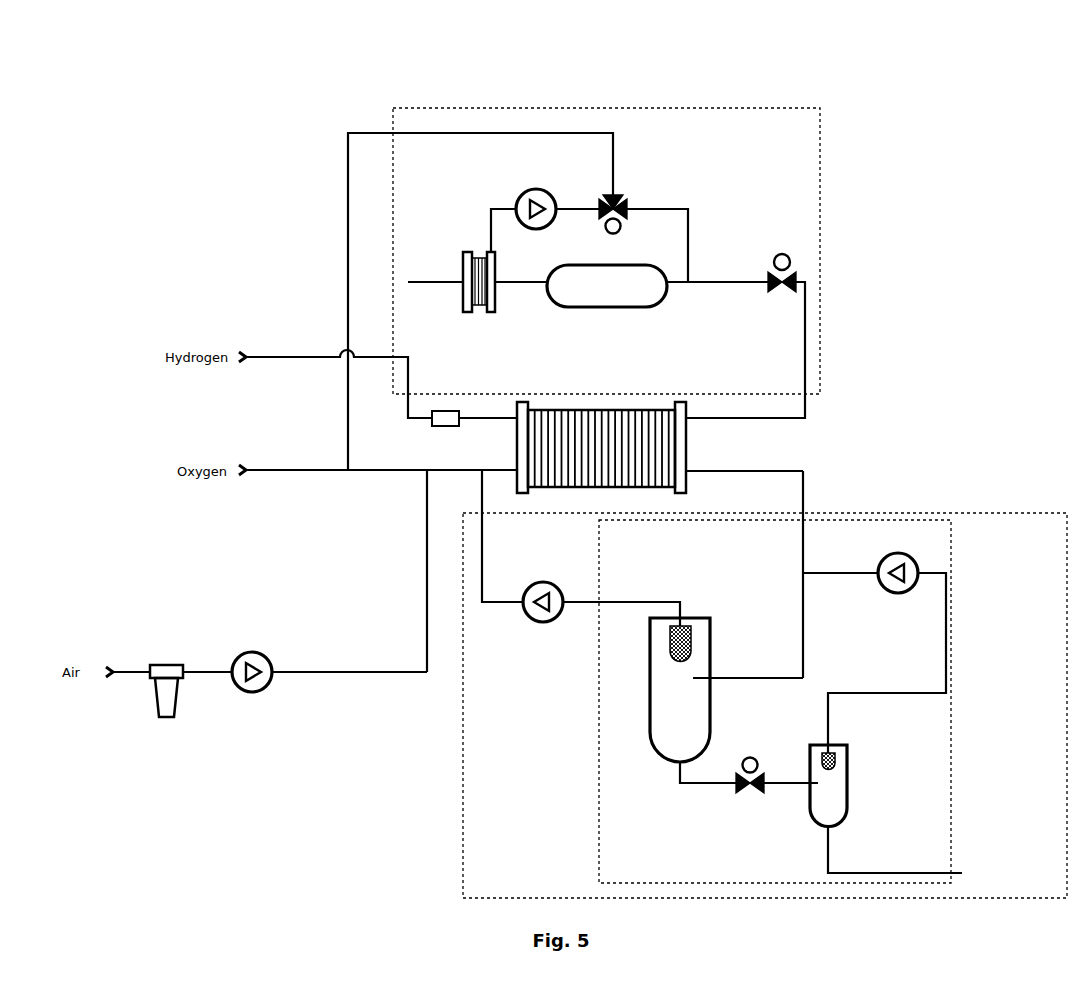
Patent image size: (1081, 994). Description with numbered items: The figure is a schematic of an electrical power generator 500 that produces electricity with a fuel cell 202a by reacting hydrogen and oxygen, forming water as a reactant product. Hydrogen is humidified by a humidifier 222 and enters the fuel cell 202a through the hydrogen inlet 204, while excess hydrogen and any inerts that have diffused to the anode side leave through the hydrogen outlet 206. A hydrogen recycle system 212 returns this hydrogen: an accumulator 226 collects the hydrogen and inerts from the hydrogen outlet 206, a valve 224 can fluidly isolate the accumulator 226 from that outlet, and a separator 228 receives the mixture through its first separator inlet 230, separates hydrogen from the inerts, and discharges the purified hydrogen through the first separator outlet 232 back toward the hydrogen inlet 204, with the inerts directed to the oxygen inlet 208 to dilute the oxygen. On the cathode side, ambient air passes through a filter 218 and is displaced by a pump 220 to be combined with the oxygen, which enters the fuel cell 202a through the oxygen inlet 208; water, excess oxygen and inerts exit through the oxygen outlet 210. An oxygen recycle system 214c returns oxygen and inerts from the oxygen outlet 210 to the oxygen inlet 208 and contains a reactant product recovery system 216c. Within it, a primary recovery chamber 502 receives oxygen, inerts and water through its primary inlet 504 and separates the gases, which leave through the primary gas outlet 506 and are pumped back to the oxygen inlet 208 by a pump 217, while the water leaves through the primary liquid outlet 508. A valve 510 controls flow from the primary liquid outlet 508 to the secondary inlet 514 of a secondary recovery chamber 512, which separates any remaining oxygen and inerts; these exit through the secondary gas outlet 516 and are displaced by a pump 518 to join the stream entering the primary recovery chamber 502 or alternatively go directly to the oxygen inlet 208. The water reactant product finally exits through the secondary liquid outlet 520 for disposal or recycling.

The electrical power generator 500 is at (632, 64).
The hydrogen recycle system 212 is at (744, 96).
The first separator inlet 230 is at (534, 188).
The first separator outlet 232 is at (617, 198).
The valve 224 is at (783, 253).
The accumulator 226 is at (656, 308).
The separator 228 is at (472, 313).
The humidifier 222 is at (446, 410).
The fuel cell 202a is at (635, 407).
The hydrogen inlet 204 is at (515, 421).
The hydrogen outlet 206 is at (690, 421).
The oxygen inlet 208 is at (515, 474).
The oxygen outlet 210 is at (691, 475).
The oxygen recycle system 214c is at (911, 500).
The reactant product recovery system 216c is at (986, 578).
The pump 518 is at (899, 554).
The pump 217 is at (544, 624).
The primary recovery chamber 502 is at (650, 681).
The primary gas outlet 506 is at (676, 615).
The primary inlet 504 is at (710, 677).
The primary liquid outlet 508 is at (679, 763).
The valve 510 is at (750, 757).
The secondary inlet 514 is at (808, 781).
The secondary recovery chamber 512 is at (849, 773).
The secondary gas outlet 516 is at (834, 752).
The secondary liquid outlet 520 is at (831, 829).
The filter 218 is at (170, 664).
The pump 220 is at (252, 652).